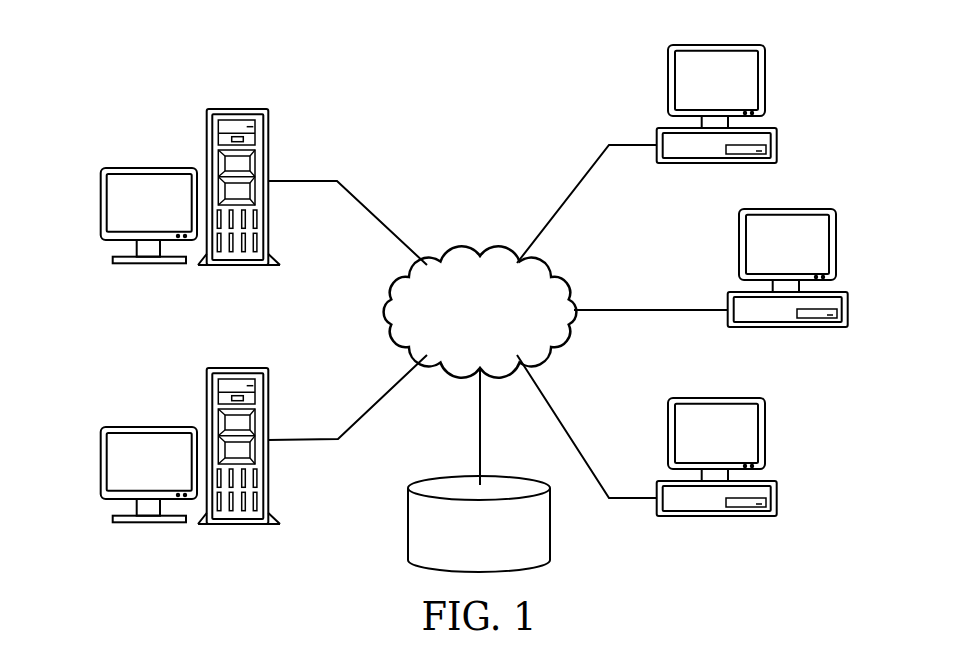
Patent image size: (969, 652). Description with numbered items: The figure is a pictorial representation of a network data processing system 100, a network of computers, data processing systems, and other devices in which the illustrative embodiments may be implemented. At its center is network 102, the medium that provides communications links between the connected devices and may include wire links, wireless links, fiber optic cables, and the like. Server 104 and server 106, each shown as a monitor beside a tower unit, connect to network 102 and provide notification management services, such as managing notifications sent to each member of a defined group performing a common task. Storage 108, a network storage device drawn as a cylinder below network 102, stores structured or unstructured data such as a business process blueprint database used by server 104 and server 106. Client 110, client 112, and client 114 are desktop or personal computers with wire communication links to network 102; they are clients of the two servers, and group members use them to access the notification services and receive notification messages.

The network data processing system 100 is at (347, 90).
The network 102 is at (452, 258).
The server 104 is at (101, 209).
The server 106 is at (101, 463).
The storage 108 is at (408, 520).
The client 110 is at (778, 136).
The client 112 is at (847, 317).
The client 114 is at (778, 508).